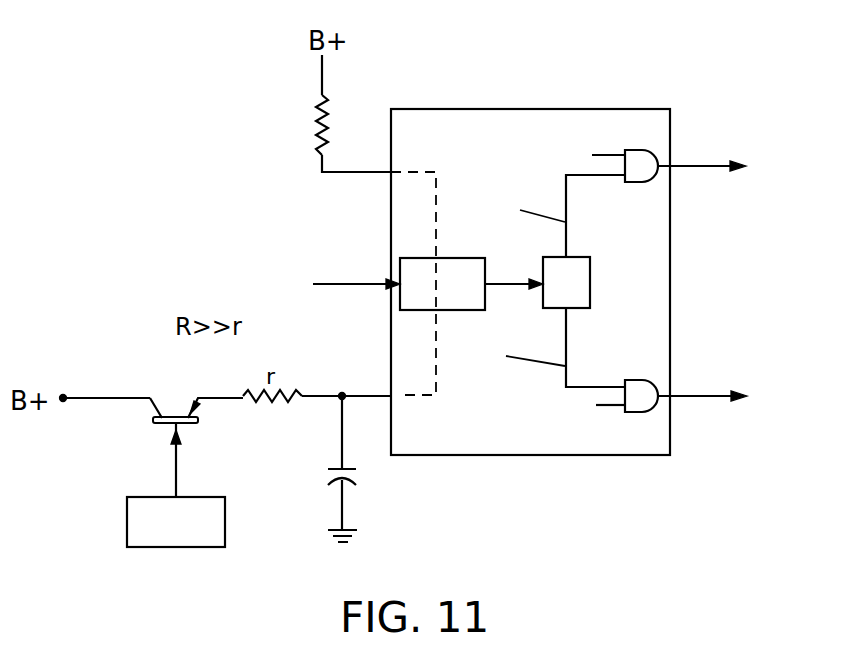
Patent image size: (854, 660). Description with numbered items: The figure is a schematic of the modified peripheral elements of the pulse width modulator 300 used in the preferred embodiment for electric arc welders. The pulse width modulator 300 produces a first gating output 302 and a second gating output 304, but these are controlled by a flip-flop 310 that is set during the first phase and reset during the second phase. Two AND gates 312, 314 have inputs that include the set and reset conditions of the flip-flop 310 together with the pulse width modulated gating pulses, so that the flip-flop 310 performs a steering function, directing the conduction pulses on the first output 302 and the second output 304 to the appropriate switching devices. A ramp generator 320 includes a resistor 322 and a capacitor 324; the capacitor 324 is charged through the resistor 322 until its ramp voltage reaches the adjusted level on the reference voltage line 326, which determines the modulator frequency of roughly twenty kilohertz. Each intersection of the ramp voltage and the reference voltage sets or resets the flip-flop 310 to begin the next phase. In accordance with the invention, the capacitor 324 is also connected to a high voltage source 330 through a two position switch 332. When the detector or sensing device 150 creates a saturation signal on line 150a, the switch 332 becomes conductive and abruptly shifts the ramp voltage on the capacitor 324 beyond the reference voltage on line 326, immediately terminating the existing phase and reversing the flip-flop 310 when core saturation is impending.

The pulse width modulator 300 is at (592, 108).
The Q1 output 302 is at (705, 164).
The Q2 output 304 is at (702, 394).
The flip-flop 310 is at (590, 282).
The AND gate 312 is at (652, 152).
The AND gate 314 is at (638, 410).
The ramp generator 320 is at (413, 258).
The resistor 322 is at (318, 111).
The capacitor 324 is at (357, 476).
The reference voltage line 326 is at (342, 288).
The high voltage source 330 is at (63, 395).
The two position switch 332 is at (153, 426).
The detector or sensing device 150 is at (238, 530).
The saturation signal line 150a is at (176, 466).